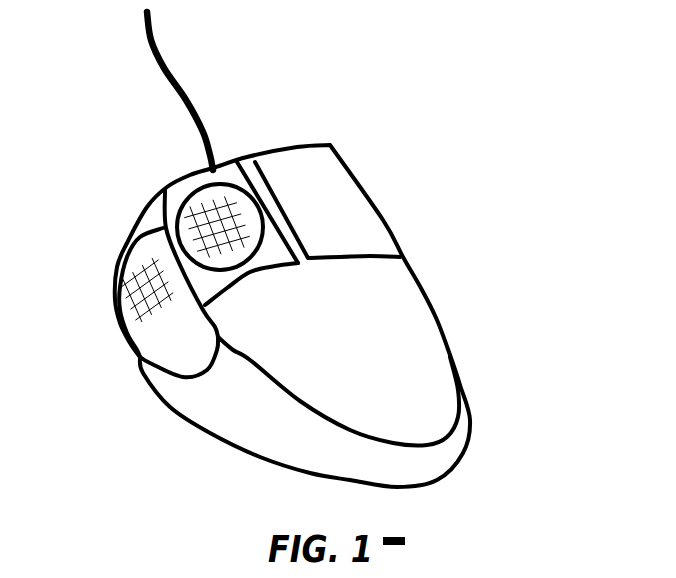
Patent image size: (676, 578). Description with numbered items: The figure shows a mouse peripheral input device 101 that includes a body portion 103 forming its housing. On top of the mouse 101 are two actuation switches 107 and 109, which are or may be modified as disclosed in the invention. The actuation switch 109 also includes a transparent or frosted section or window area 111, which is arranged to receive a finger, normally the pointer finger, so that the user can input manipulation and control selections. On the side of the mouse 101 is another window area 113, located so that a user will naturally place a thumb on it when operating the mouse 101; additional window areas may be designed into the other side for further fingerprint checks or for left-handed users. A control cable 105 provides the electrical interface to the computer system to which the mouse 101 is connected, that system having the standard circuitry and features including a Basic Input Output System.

The mouse peripheral input device 101 is at (452, 214).
The body portion 103 is at (440, 317).
The control cable 105 is at (226, 40).
The actuation switch 107 is at (335, 170).
The actuation switch 109 is at (227, 167).
The window area 111 is at (188, 223).
The window area 113 is at (188, 340).